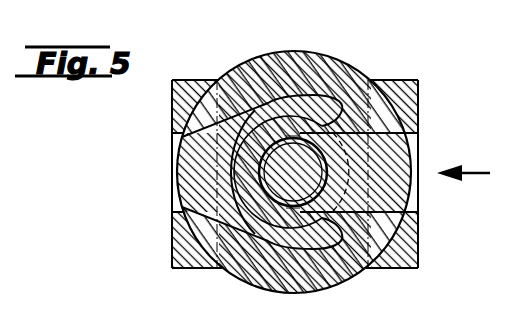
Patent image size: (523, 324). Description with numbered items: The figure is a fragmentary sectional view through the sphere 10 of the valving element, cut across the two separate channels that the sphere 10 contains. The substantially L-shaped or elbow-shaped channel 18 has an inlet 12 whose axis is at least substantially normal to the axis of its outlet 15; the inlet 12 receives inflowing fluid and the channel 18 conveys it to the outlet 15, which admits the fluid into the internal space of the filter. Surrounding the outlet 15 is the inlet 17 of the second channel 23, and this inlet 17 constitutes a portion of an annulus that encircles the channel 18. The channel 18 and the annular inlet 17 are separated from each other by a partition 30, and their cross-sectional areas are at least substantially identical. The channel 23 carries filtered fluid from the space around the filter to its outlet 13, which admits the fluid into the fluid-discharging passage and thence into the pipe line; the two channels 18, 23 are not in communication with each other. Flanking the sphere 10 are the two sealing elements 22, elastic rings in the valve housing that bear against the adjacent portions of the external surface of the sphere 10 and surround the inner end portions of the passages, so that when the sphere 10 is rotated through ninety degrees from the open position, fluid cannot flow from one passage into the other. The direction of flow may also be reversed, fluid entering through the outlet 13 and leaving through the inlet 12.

The sphere 10 is at (328, 75).
The inlet 12 is at (384, 159).
The outlet 13 is at (204, 188).
The outlet 15 is at (306, 186).
The inlet 17 is at (237, 156).
The channel 18 is at (397, 192).
The sealing elements 22 is at (410, 93).
The channel 23 is at (273, 236).
The partition 30 is at (268, 124).